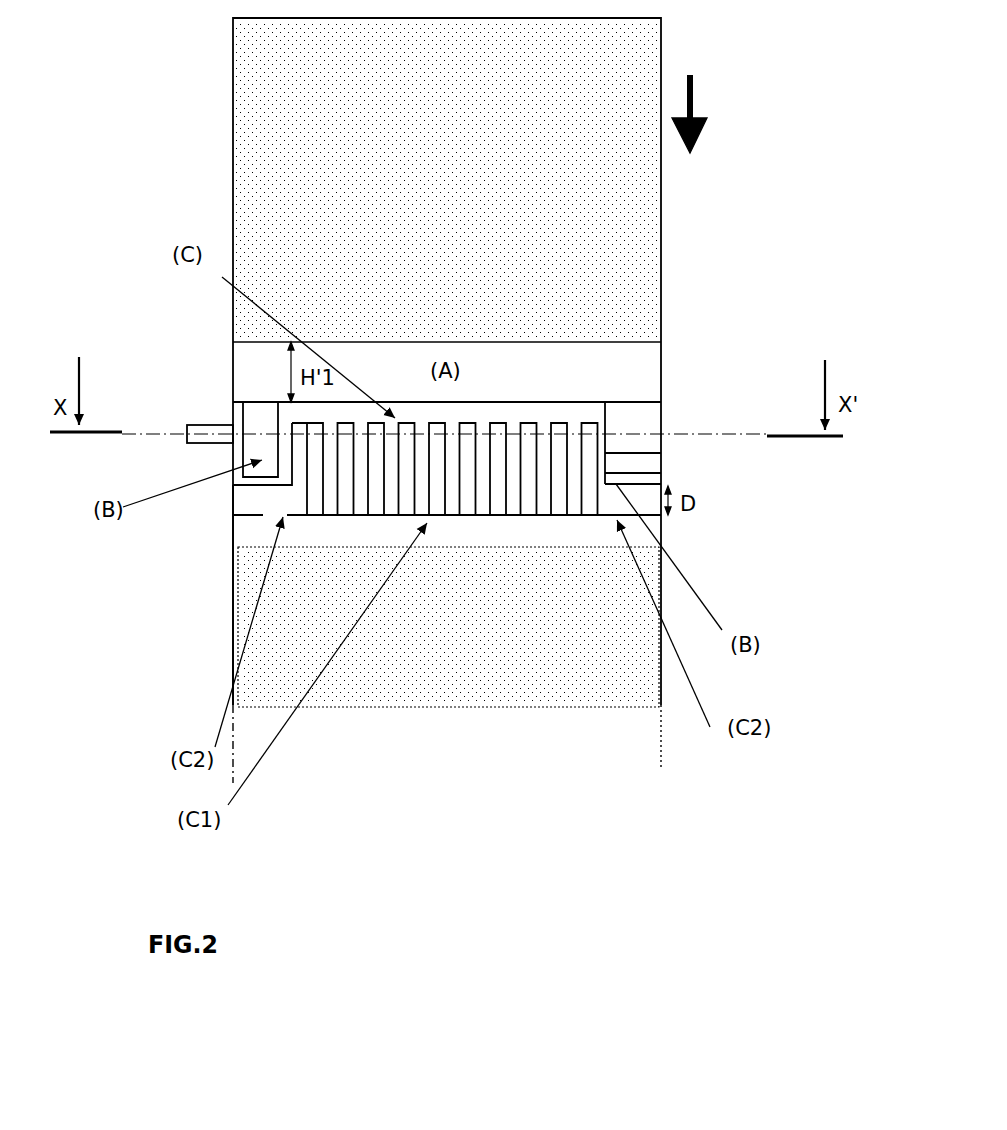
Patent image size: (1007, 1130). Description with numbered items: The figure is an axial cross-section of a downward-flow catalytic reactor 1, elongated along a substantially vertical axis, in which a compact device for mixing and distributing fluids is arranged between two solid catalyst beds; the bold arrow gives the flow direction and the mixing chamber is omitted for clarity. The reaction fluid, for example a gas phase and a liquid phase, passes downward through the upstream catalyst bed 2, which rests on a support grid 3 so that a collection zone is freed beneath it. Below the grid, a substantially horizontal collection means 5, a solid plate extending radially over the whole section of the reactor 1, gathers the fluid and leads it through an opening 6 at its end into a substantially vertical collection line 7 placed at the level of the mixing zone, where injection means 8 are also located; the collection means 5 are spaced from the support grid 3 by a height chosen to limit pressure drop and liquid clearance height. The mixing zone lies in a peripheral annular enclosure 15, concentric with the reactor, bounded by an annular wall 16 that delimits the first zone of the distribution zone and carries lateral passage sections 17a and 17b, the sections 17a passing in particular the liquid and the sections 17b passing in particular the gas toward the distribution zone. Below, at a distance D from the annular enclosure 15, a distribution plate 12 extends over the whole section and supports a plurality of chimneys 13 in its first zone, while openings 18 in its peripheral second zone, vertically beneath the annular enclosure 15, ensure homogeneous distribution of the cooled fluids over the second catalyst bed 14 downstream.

The reactor 1 is at (233, 226).
The catalyst bed 2 is at (447, 200).
The support grid 3 is at (240, 342).
The collection means 5 is at (578, 400).
The opening 6 is at (245, 398).
The collection line 7 is at (243, 420).
The injection means 8 is at (203, 443).
The distribution plate 12 is at (537, 515).
The chimneys 13 is at (507, 447).
The catalyst bed 14 is at (455, 643).
The annular enclosure 15 is at (610, 453).
The annular wall 16 is at (645, 446).
The lateral passage section 17a is at (618, 483).
The lateral passage section 17b is at (607, 404).
The openings 18 is at (270, 515).